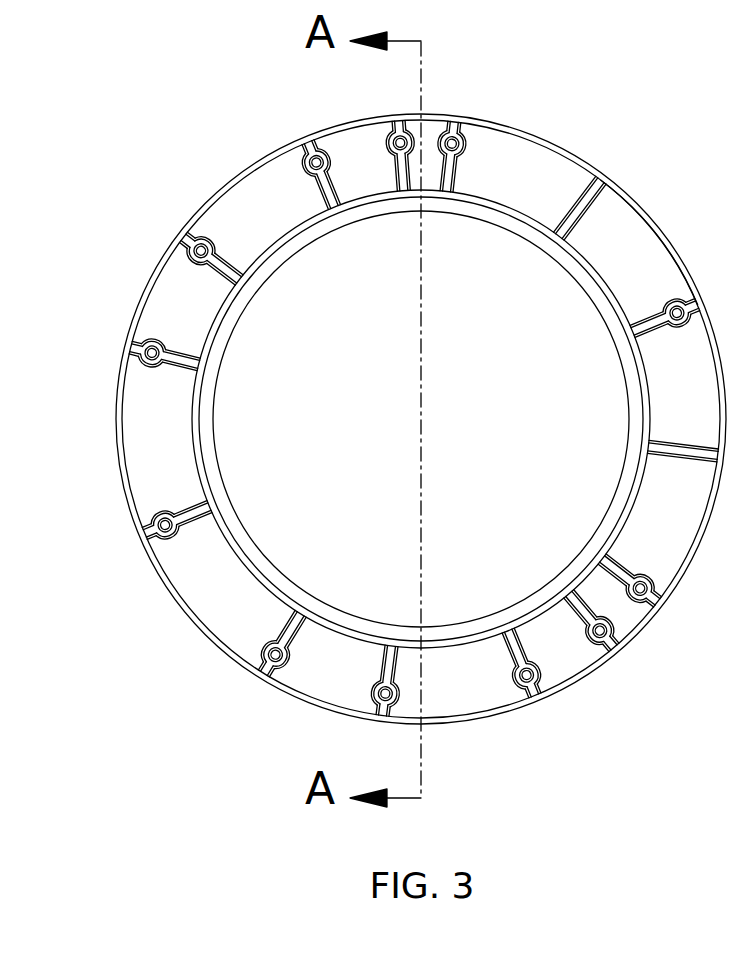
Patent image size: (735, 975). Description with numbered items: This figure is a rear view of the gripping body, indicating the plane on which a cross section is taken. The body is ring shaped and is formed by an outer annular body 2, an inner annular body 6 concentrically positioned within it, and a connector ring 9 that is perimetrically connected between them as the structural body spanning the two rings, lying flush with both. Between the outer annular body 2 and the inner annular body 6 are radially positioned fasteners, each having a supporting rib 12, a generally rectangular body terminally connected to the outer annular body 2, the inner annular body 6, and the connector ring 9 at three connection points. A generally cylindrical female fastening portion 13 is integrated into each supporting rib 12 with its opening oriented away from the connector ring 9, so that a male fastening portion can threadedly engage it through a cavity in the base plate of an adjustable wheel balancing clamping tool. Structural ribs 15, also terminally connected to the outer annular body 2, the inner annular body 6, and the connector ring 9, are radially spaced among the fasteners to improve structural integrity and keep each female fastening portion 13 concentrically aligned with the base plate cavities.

The outer annular body 2 is at (487, 116).
The inner annular body 6 is at (489, 621).
The connector ring 9 is at (628, 242).
The supporting rib 12 is at (178, 363).
The female fastening portion 13 is at (157, 343).
The structural rib 15 is at (580, 206).